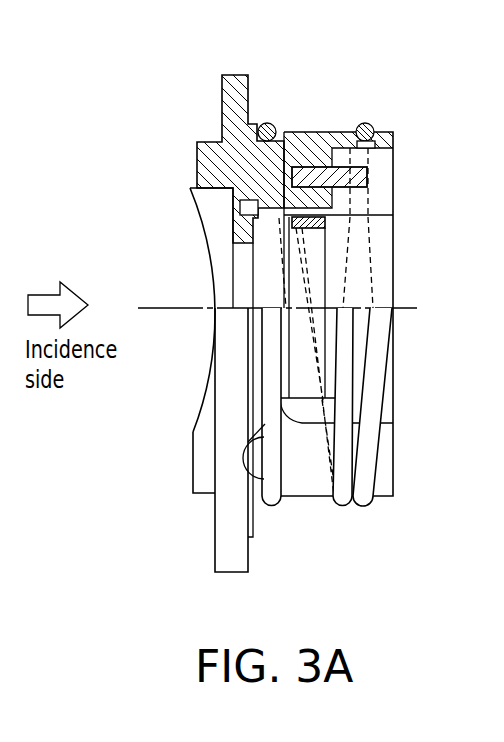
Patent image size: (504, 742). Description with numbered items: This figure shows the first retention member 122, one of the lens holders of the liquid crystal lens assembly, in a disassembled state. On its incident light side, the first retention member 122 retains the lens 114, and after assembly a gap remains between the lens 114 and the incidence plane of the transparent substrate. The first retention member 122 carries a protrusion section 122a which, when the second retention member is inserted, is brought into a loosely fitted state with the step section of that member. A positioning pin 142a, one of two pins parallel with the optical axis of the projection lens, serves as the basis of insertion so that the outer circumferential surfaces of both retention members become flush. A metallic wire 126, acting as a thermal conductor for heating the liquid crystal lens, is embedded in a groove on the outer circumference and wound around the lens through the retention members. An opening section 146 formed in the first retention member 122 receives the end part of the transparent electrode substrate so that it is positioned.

The lens 114 is at (180, 236).
The first retention member 122 is at (222, 128).
The protrusion section 122a is at (402, 127).
The metallic wire 126 is at (268, 124).
The positioning pin 142a is at (360, 175).
The opening section 146 is at (402, 407).